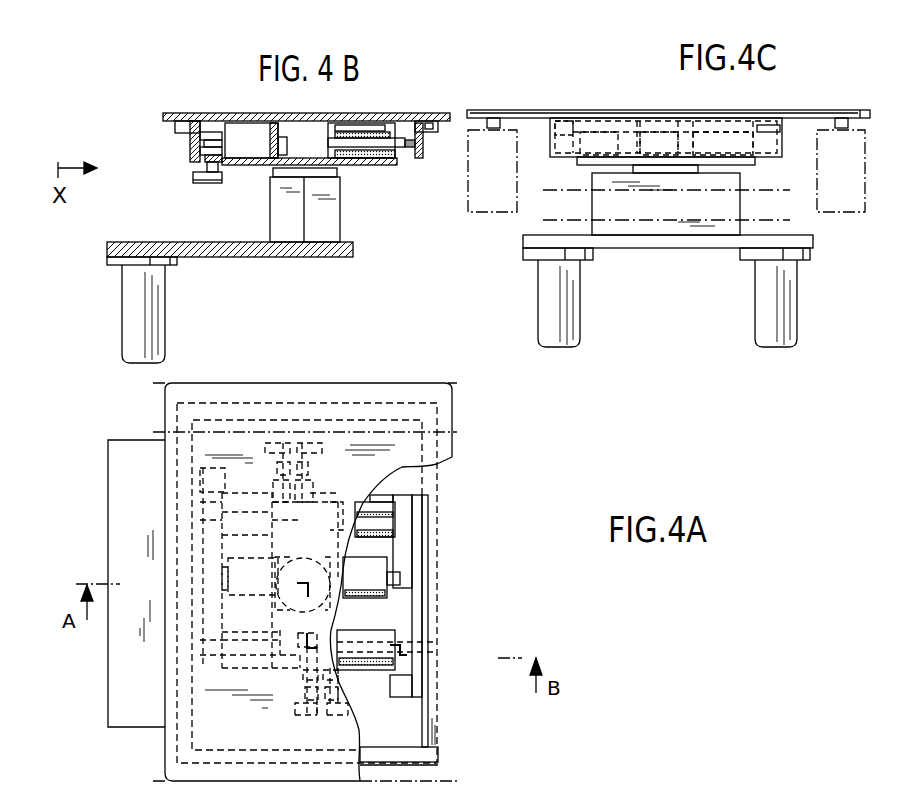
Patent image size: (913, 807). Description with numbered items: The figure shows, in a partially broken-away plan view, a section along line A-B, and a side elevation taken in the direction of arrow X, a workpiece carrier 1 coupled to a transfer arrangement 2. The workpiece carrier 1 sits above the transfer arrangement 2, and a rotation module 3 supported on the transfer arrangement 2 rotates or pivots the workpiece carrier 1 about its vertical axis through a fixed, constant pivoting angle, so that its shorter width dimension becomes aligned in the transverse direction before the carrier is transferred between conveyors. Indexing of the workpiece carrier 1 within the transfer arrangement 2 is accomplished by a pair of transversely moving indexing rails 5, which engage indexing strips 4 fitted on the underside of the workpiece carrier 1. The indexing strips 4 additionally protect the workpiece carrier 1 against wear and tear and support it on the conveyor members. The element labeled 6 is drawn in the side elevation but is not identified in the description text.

In FIG. 4B, the workpiece carrier 1 is at (178, 120).
In FIG. 4C, the workpiece carrier 1 is at (840, 112).
In FIG. 4A, the workpiece carrier 1 is at (403, 465).
In FIG. 4B, the transfer arrangement 2 is at (188, 242).
In FIG. 4C, the transfer arrangement 2 is at (807, 240).
In FIG. 4A, the transfer arrangement 2 is at (118, 545).
In FIG. 4B, the rotation module 3 is at (280, 212).
In FIG. 4C, the rotation module 3 is at (697, 215).
In FIG. 4B, the indexing strip 4 is at (182, 132).
In FIG. 4A, the indexing strip 4 is at (428, 607).
In FIG. 4B, the indexing rail 5 is at (192, 155).
In FIG. 4C, the indexing rail 5 is at (628, 140).
In FIG. 4A, the indexing rail 5 is at (418, 552).
In FIG. 4C, the guide block 6 is at (853, 172).